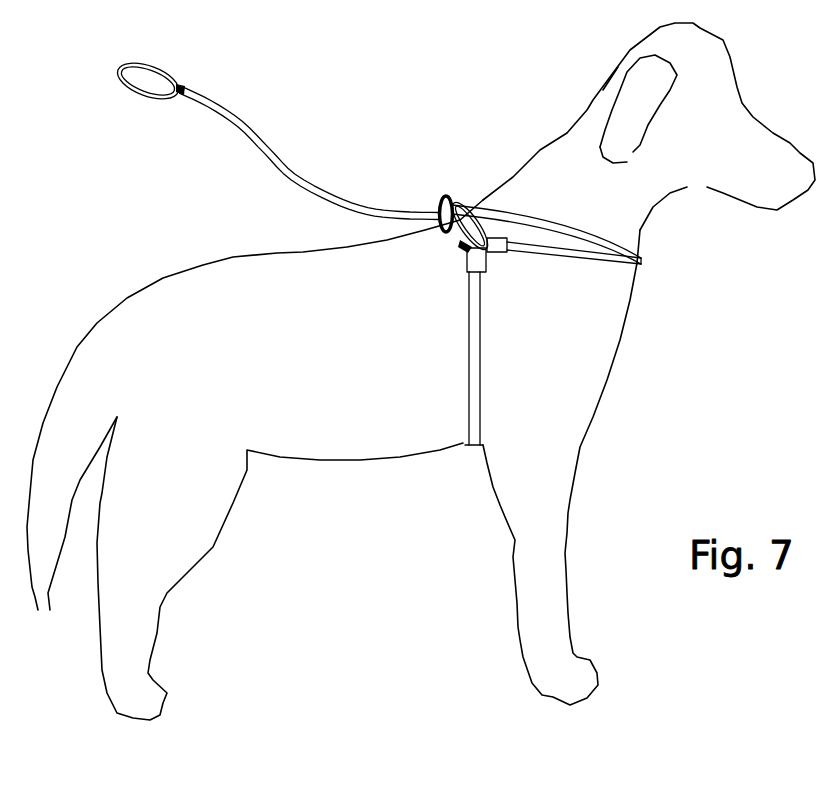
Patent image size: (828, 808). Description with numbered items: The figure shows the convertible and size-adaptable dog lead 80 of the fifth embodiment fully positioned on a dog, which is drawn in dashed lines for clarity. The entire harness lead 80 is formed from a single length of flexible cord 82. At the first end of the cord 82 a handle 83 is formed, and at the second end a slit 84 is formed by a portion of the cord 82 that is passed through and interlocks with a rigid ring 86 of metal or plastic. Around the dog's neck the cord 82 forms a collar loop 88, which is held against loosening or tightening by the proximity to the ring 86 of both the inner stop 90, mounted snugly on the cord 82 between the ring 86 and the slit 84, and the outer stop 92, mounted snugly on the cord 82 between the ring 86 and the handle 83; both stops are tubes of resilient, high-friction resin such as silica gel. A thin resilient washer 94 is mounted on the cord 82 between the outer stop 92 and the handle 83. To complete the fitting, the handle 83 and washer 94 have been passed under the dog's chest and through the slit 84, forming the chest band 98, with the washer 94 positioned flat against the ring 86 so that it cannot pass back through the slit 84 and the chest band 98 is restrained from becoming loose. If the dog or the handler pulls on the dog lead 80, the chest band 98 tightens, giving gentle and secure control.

The harness lead 80 is at (430, 108).
The flexible cord 82 is at (297, 177).
The handle 83 is at (133, 93).
The slit 84 is at (453, 200).
The ring 86 is at (465, 246).
The collar loop 88 is at (642, 262).
The inner stop 90 is at (487, 253).
The outer stop 92 is at (494, 253).
The washer 94 is at (438, 205).
The chest band 98 is at (469, 335).